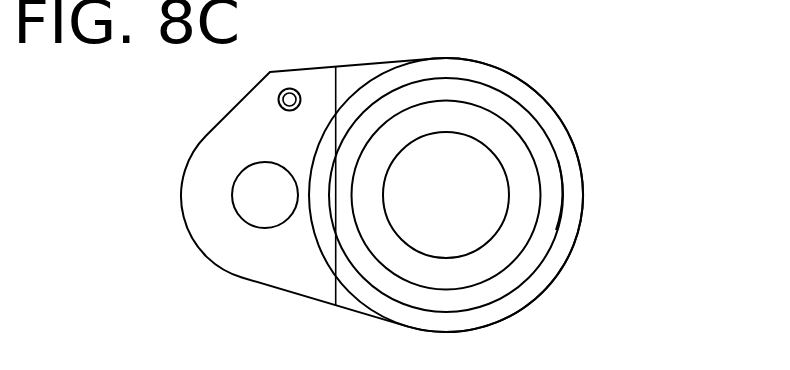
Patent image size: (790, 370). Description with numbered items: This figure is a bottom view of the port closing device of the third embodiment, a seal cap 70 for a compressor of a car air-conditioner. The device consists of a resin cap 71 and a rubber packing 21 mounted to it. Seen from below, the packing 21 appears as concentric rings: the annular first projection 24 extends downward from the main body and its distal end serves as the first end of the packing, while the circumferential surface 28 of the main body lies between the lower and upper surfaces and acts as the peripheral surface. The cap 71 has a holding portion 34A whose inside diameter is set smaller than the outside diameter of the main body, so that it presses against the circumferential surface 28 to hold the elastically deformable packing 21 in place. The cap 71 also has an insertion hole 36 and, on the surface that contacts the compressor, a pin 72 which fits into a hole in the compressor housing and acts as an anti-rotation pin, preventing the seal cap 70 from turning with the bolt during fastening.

The seal cap 70 is at (592, 215).
The cap 71 is at (573, 138).
The packing 21 is at (538, 265).
The circumferential surface 28 is at (557, 230).
The first projection 24 is at (507, 118).
The holding portion 34A is at (557, 160).
The insertion hole 36 is at (277, 204).
The pin 72 is at (278, 99).